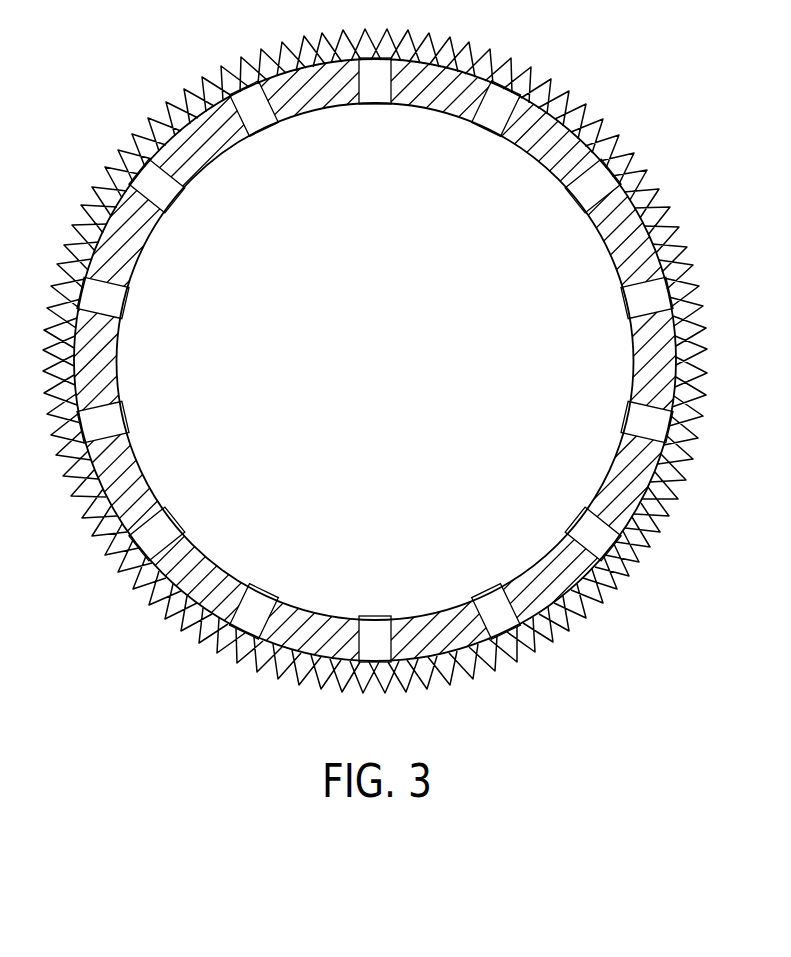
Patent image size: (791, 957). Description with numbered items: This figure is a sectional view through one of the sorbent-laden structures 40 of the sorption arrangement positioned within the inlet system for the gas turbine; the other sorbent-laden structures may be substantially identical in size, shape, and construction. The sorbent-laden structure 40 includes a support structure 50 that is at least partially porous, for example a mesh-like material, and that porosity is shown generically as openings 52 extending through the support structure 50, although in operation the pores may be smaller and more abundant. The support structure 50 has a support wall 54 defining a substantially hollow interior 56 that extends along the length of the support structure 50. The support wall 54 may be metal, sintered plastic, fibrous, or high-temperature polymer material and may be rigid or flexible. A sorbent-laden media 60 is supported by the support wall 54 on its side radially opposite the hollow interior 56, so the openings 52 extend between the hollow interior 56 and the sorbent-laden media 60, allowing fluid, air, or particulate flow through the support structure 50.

The sorbent-laden structure 40 is at (70, 69).
The support structure 50 is at (395, 360).
The openings 52 is at (163, 197).
The support wall 54 is at (107, 378).
The hollow interior 56 is at (384, 375).
The sorbent-laden media 60 is at (605, 120).